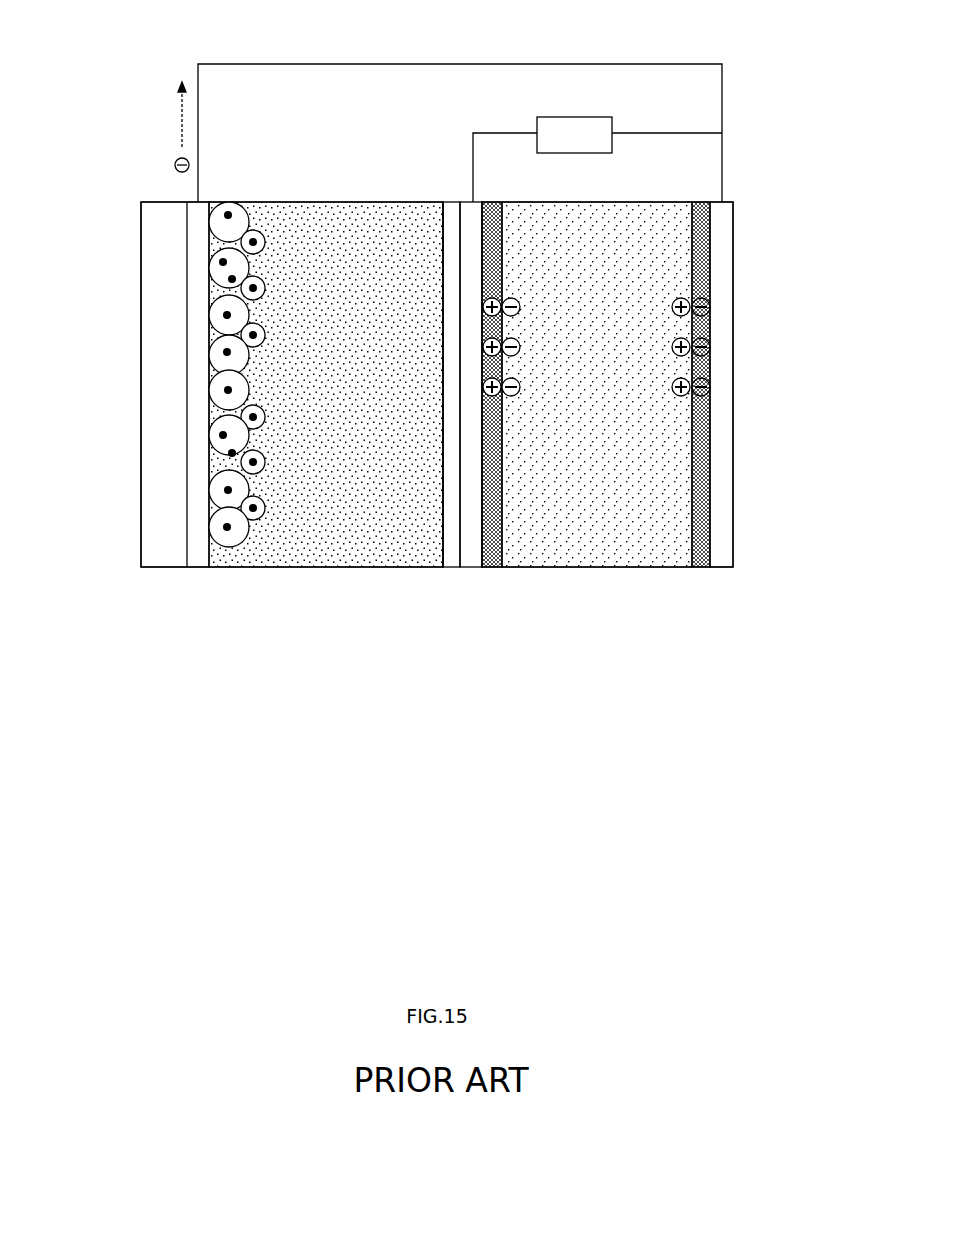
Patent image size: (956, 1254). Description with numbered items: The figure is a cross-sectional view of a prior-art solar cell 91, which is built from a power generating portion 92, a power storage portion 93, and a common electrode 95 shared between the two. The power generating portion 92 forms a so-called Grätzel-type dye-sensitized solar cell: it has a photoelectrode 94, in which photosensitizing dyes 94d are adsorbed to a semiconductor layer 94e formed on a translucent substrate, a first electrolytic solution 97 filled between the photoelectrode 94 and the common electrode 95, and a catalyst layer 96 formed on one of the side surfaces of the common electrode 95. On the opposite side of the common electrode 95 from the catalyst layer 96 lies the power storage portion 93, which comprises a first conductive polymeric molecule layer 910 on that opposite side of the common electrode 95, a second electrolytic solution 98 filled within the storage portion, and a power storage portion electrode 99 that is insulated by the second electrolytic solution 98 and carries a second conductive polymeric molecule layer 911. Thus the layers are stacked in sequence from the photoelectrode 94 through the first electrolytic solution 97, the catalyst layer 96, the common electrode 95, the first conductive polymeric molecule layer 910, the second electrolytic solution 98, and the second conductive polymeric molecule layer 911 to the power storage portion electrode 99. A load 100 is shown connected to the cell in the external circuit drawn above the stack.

The solar cell 91 is at (460, 42).
The power generating portion 92 is at (235, 695).
The power storage portion 93 is at (537, 695).
The photoelectrode 94 is at (187, 307).
The semiconductor layer 94e is at (222, 356).
The photosensitizing dyes 94d is at (228, 392).
The common electrode 95 is at (468, 207).
The catalyst layer 96 is at (450, 232).
The first electrolytic solution 97 is at (353, 513).
The second electrolytic solution 98 is at (585, 480).
The power storage portion electrode 99 is at (733, 225).
The load 100 is at (574, 125).
The first conductive polymeric molecule layer 910 is at (487, 567).
The second conductive polymeric molecule layer 911 is at (698, 550).